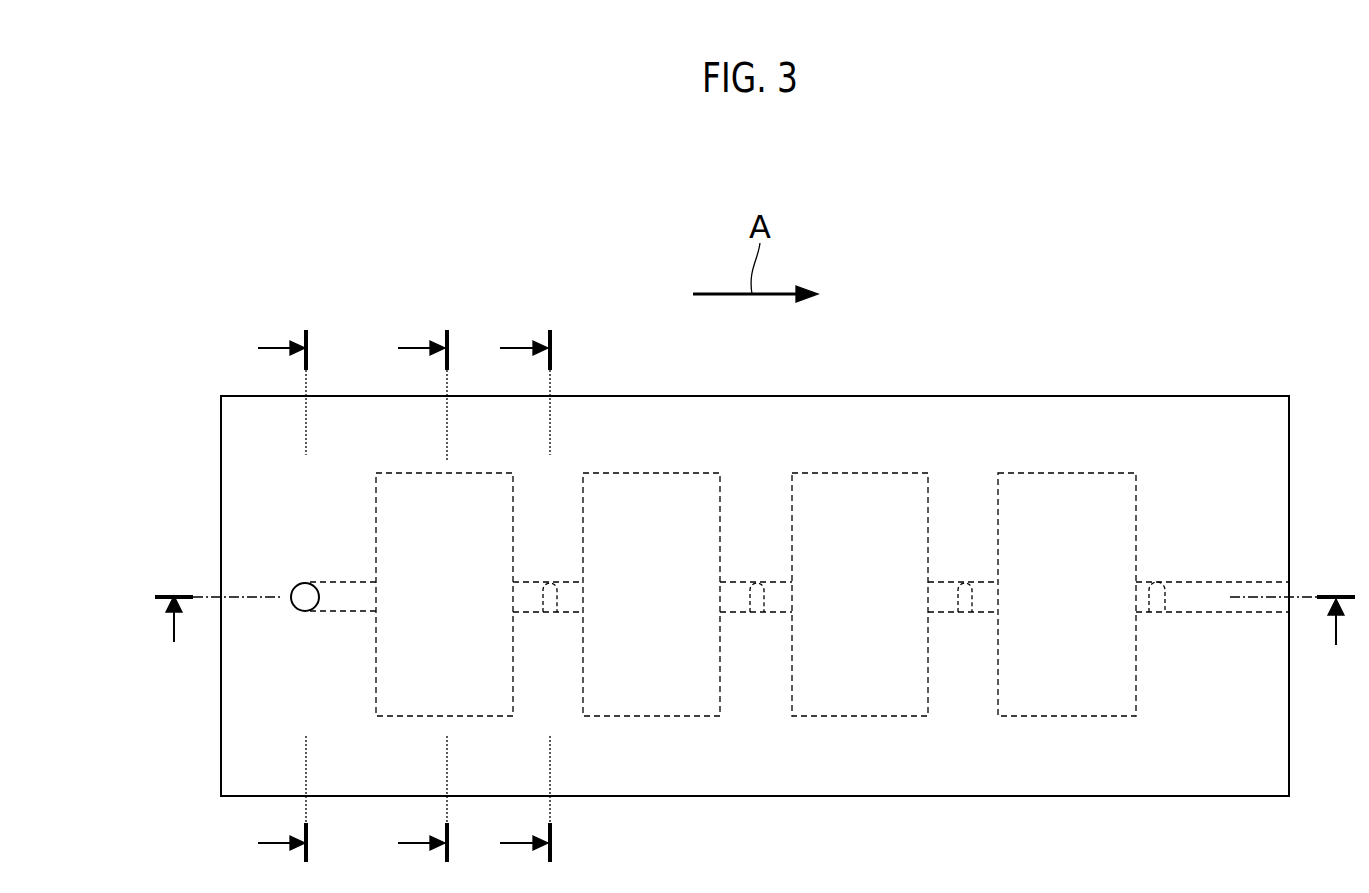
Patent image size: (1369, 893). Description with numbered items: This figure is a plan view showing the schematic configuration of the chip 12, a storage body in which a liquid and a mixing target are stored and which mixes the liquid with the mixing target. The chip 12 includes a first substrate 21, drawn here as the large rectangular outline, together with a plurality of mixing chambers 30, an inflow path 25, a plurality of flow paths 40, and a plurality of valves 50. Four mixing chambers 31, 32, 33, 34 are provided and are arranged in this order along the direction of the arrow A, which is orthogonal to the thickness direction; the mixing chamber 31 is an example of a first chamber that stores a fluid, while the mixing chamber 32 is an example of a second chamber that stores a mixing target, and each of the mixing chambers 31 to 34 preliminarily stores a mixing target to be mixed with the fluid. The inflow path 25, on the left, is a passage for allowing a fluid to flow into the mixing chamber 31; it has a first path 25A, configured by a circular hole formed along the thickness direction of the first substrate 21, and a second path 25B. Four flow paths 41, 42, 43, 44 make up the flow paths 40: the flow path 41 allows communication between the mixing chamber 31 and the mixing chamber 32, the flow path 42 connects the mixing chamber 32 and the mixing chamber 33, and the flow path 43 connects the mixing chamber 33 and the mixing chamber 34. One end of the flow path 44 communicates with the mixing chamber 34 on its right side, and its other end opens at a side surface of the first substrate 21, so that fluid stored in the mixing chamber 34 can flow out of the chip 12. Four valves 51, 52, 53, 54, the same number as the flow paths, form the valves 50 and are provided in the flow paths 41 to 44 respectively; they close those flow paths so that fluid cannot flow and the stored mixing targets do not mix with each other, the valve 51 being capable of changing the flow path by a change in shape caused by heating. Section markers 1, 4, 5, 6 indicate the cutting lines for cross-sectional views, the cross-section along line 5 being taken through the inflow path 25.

The chip 12 is at (170, 295).
The first substrate 21 is at (240, 438).
The inflow path 25 is at (353, 512).
The first path 25A is at (296, 586).
The second path 25B is at (355, 590).
The mixing chambers 30 is at (748, 566).
The mixing chamber 31 is at (377, 520).
The mixing chamber 32 is at (585, 520).
The mixing chamber 33 is at (794, 520).
The mixing chamber 34 is at (1000, 520).
The flow paths 40 is at (901, 534).
The flow path 41 is at (528, 586).
The flow path 42 is at (742, 586).
The flow path 43 is at (950, 586).
The flow path 44 is at (1195, 594).
The valves 50 is at (880, 673).
The valve 51 is at (553, 612).
The valve 52 is at (757, 612).
The valve 53 is at (965, 612).
The valve 54 is at (1158, 612).
The section line 1- 1 is at (755, 639).
The section line 4 is at (411, 596).
The line 5- 5 is at (270, 596).
The section line 6 is at (513, 596).